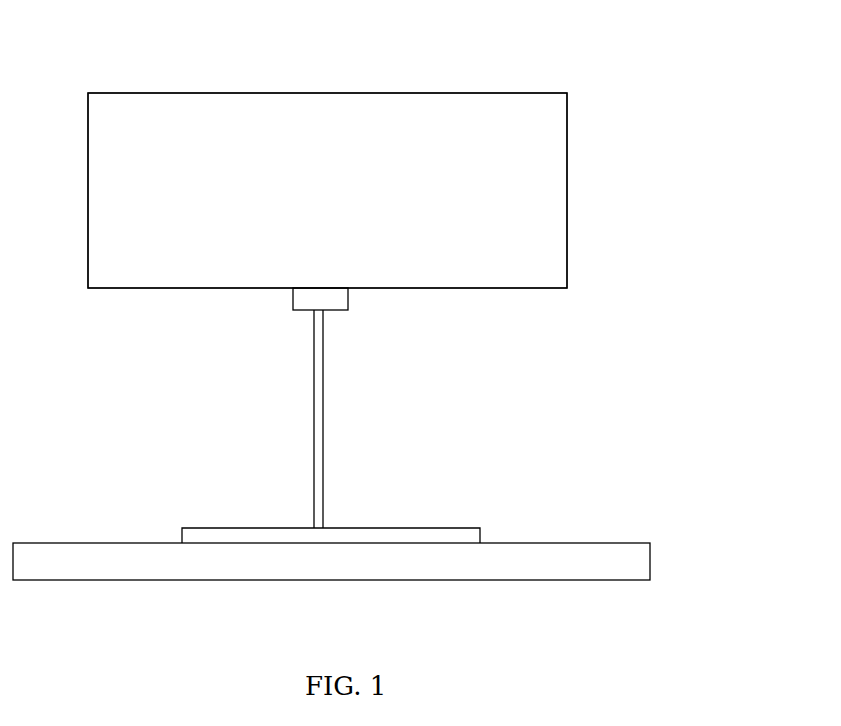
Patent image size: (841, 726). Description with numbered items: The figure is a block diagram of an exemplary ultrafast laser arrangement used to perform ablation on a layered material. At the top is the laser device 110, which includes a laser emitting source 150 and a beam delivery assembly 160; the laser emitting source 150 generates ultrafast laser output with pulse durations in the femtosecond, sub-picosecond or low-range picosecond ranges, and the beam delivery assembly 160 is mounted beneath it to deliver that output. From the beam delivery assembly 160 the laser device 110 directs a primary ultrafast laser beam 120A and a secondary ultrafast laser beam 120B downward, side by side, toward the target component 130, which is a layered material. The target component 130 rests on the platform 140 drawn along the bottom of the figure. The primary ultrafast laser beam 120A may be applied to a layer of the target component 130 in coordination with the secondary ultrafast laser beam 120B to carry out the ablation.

The laser device 110 is at (588, 108).
The laser emitting source 150 is at (567, 192).
The beam delivery assembly 160 is at (350, 311).
The primary ultrafast laser beam 120A is at (323, 483).
The secondary ultrafast laser beam 120B is at (313, 505).
The target component 130 is at (481, 528).
The platform 140 is at (653, 562).